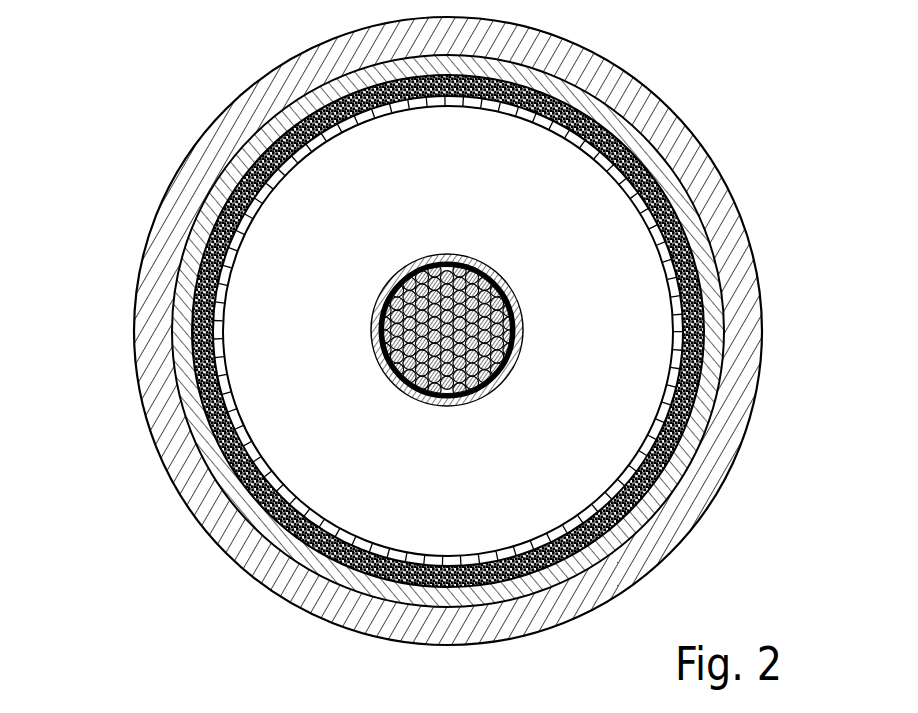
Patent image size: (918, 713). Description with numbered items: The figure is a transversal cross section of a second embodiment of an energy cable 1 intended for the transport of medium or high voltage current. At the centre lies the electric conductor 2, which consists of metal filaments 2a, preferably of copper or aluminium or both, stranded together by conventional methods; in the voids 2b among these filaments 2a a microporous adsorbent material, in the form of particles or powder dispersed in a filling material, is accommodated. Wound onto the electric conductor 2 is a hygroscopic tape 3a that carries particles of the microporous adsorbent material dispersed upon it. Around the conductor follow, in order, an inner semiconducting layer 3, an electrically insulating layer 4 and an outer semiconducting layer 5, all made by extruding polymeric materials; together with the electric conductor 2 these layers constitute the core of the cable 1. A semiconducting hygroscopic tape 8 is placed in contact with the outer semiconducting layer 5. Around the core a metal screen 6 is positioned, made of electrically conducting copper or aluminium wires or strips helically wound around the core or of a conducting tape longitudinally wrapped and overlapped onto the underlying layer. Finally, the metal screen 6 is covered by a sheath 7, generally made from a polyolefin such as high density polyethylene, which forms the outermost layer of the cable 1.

The cable 1 is at (218, 80).
The electric conductor 2 is at (508, 368).
The metal filaments 2a is at (383, 367).
The voids 2b is at (445, 400).
The inner semiconducting layer 3 is at (380, 357).
The hygroscopic tape 3a is at (462, 265).
The electrically insulating layer 4 is at (637, 392).
The outer semiconducting layer 5 is at (228, 296).
The metal screen 6 is at (712, 300).
The sheath 7 is at (175, 203).
The semiconducting hygroscopic tape 8 is at (623, 162).